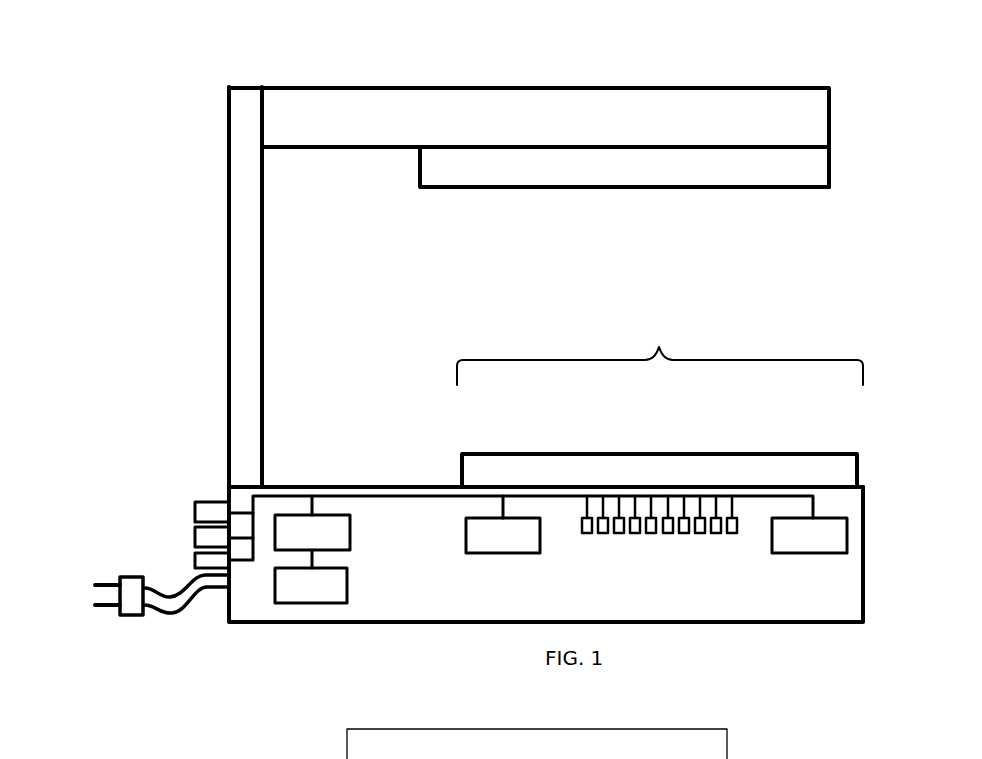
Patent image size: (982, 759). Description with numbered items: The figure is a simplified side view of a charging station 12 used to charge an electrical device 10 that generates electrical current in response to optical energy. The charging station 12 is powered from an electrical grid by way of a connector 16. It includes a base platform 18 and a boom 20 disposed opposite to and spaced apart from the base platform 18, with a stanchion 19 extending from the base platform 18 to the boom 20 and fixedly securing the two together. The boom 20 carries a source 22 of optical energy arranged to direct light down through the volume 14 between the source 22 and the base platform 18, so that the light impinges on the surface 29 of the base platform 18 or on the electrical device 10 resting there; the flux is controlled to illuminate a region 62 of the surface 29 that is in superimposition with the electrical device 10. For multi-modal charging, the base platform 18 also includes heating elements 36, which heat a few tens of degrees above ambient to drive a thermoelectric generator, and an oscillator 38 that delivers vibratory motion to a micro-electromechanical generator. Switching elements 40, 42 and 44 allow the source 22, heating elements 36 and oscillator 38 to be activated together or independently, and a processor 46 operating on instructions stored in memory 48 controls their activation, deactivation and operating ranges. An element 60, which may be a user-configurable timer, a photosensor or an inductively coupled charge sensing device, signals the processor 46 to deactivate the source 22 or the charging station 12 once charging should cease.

The charging station 12 is at (513, 52).
The volume 14 is at (855, 288).
The electrical device 10 is at (800, 452).
The connector 16 is at (143, 638).
The base platform 18 is at (320, 623).
The stanchion 19 is at (248, 244).
The boom 20 is at (729, 88).
The source of optical energy 22 is at (448, 177).
The surface 29 is at (313, 484).
The heating elements 36 is at (663, 536).
The oscillator 38 is at (800, 542).
The switching element 40 is at (197, 502).
The switching element 42 is at (197, 528).
The switching element 44 is at (197, 560).
The processor 46 is at (312, 523).
The memory 48 is at (311, 576).
The element (timer, photosensor or charge sensing device) 60 is at (482, 535).
The region 62 is at (660, 347).